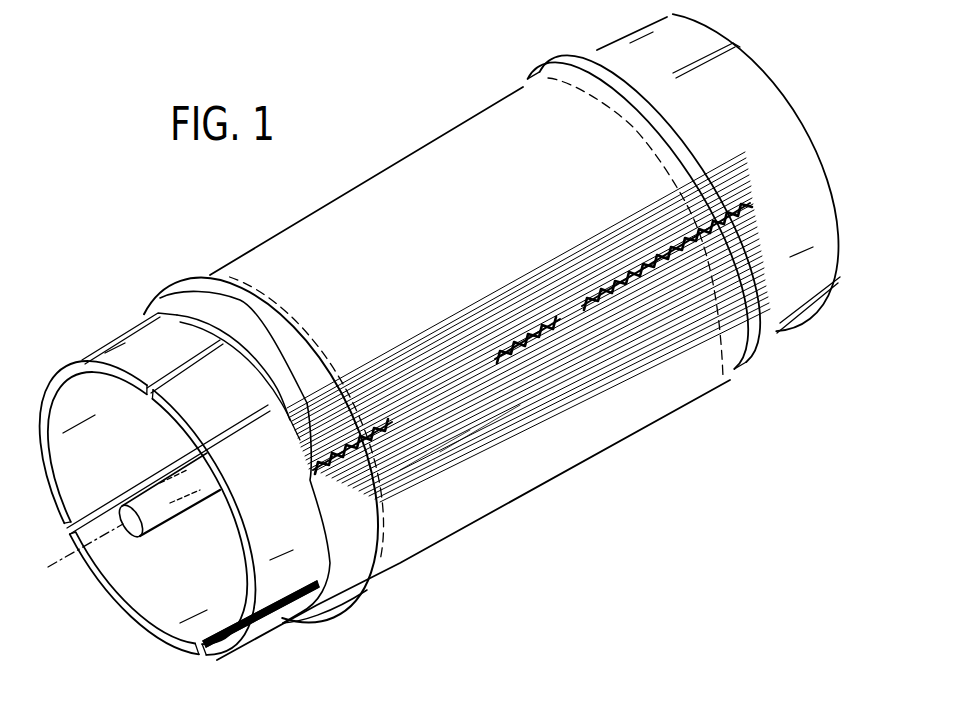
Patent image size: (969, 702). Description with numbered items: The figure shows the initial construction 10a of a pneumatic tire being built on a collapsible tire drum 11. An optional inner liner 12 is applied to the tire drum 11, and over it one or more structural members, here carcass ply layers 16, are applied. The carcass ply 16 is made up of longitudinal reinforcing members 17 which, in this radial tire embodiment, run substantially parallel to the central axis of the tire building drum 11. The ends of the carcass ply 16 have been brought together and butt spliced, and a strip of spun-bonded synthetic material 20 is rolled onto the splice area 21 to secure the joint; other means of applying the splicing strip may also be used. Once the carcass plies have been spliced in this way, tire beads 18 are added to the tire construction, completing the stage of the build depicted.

The initial construction of a pneumatic tire 10a is at (654, 490).
The collapsible tire drum 11 is at (267, 628).
The inner liner 12 is at (590, 90).
The carcass ply layer 16 is at (282, 246).
The longitudinal reinforcing members 17 is at (480, 408).
The tire beads 18 is at (721, 381).
The spun-bonded synthetic material 20 is at (597, 318).
The splice area 21 is at (429, 400).